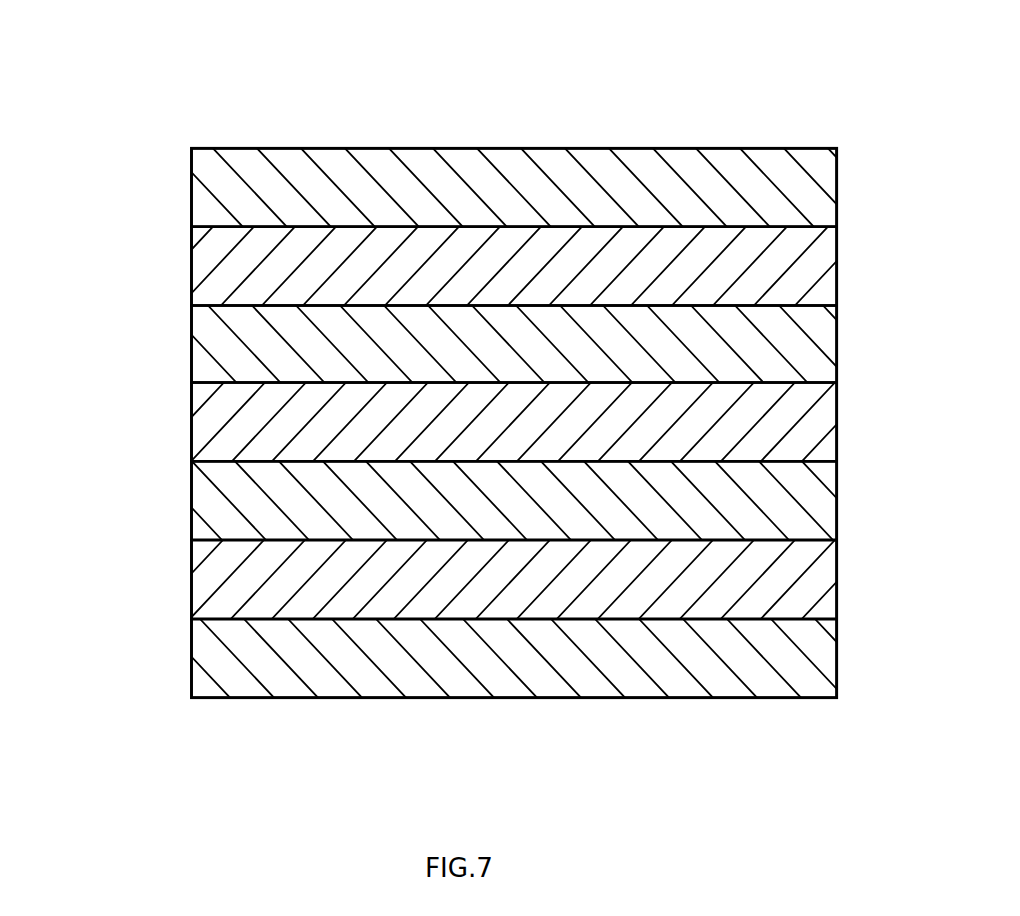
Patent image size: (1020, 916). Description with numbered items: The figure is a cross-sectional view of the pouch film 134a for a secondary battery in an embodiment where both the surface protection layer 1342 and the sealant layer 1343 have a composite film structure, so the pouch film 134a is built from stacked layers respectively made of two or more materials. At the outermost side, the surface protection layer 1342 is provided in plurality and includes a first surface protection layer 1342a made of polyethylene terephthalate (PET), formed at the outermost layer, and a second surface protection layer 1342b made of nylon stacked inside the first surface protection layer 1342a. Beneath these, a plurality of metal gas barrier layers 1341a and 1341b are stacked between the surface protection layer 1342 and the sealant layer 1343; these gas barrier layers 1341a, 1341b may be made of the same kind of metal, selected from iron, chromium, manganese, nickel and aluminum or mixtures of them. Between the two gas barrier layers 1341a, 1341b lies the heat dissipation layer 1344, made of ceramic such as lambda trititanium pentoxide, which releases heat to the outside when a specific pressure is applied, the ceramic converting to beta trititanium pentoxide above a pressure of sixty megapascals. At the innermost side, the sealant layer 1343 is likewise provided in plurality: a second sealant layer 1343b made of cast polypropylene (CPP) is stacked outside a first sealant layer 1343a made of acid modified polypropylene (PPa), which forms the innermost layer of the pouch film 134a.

The pouch film 134a is at (503, 86).
The surface protection layer 1342 is at (92, 190).
The first surface protection layer 1342a is at (191, 188).
The second surface protection layer 1342b is at (191, 266).
The gas barrier layer 1341a is at (827, 340).
The heat dissipation layer 1344 is at (191, 427).
The gas barrier layer 1341b is at (827, 496).
The sealant layer 1343 is at (92, 582).
The second sealant layer 1343b is at (191, 579).
The first sealant layer 1343a is at (191, 660).